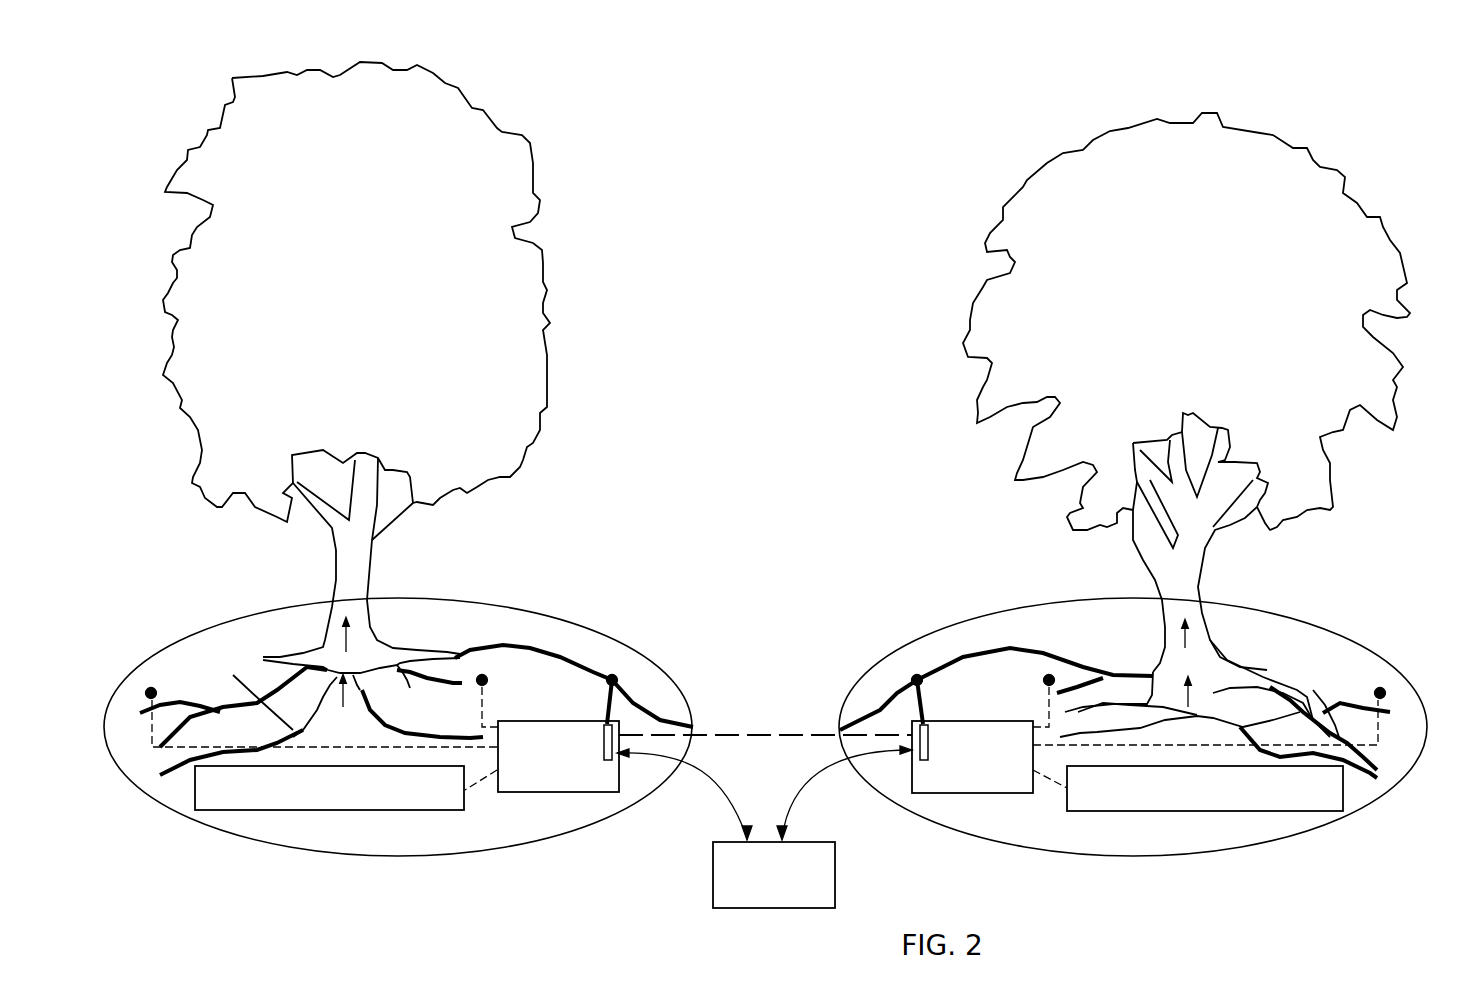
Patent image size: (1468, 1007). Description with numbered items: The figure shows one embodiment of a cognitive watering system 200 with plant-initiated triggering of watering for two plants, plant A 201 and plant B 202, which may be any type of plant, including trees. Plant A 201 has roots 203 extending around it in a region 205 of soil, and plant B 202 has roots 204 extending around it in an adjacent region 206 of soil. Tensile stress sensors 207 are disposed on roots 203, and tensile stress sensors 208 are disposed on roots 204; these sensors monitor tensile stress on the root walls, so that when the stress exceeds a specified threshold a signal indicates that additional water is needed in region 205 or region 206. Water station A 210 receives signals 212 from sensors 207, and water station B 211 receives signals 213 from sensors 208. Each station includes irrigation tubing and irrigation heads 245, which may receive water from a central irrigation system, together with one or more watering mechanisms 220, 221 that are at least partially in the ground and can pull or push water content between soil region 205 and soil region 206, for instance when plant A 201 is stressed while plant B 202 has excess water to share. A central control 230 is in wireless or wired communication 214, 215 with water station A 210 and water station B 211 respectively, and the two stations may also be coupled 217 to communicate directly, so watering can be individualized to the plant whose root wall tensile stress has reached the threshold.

The cognitive watering system 200 is at (767, 126).
The plant A 201 is at (409, 368).
The plant B 202 is at (1128, 389).
The roots 203 is at (284, 651).
The roots 204 is at (1200, 664).
The region 205 is at (398, 745).
The region 206 is at (1133, 744).
The tensile stress sensors 207 is at (629, 663).
The tensile stress sensors 208 is at (910, 656).
The water station A 210 is at (558, 811).
The water station B 211 is at (972, 809).
The signals 212 is at (441, 709).
The signals 213 is at (1091, 710).
The wireless or wired communication 214 is at (684, 794).
The wireless or wired communication 215 is at (844, 793).
The coupling for wireless or wired communication 217 is at (765, 715).
The watering mechanisms 220 is at (293, 808).
The watering mechanisms 221 is at (1242, 797).
The central control 230 is at (725, 875).
The irrigation tubing and irrigation heads 245 is at (763, 661).